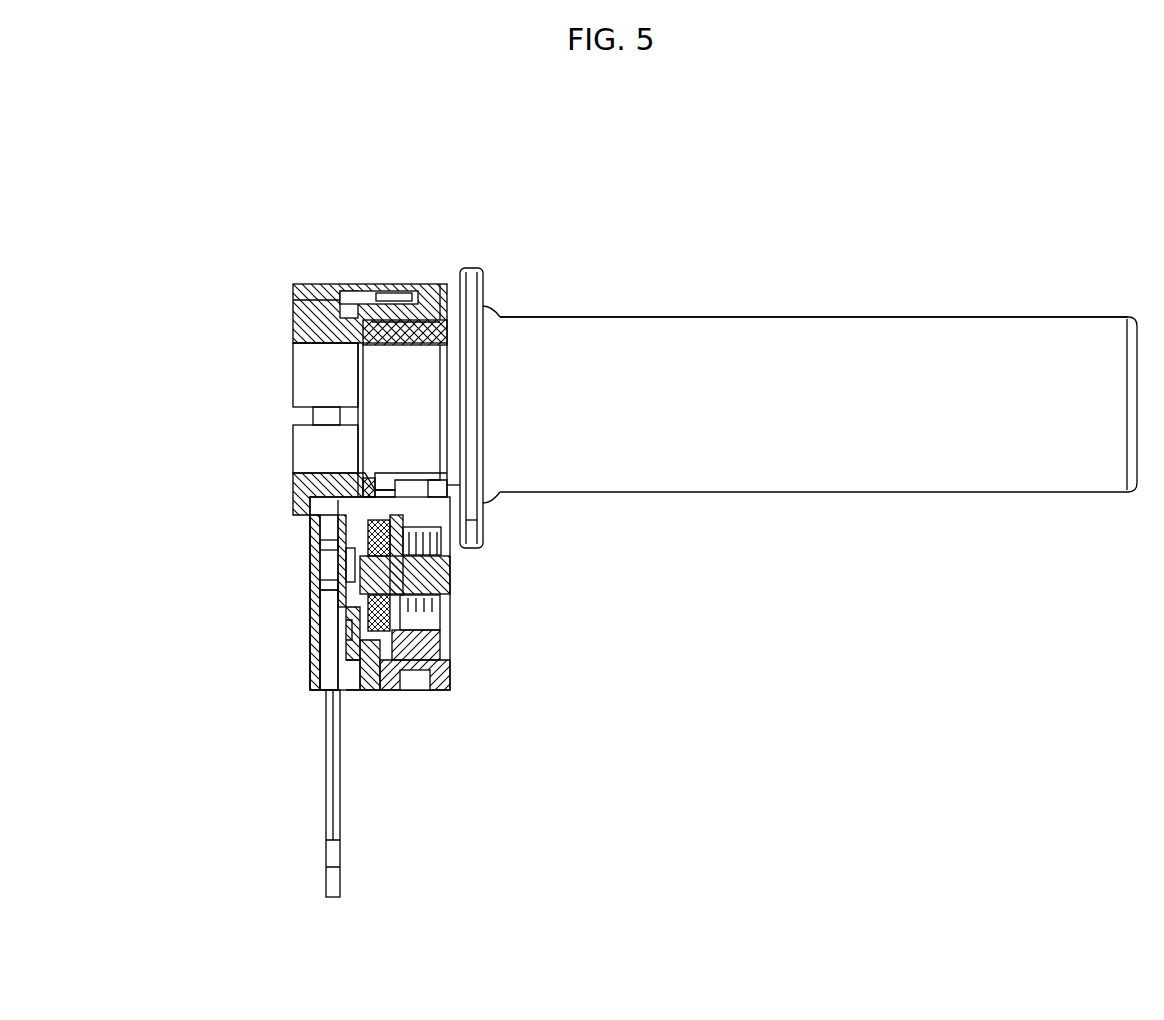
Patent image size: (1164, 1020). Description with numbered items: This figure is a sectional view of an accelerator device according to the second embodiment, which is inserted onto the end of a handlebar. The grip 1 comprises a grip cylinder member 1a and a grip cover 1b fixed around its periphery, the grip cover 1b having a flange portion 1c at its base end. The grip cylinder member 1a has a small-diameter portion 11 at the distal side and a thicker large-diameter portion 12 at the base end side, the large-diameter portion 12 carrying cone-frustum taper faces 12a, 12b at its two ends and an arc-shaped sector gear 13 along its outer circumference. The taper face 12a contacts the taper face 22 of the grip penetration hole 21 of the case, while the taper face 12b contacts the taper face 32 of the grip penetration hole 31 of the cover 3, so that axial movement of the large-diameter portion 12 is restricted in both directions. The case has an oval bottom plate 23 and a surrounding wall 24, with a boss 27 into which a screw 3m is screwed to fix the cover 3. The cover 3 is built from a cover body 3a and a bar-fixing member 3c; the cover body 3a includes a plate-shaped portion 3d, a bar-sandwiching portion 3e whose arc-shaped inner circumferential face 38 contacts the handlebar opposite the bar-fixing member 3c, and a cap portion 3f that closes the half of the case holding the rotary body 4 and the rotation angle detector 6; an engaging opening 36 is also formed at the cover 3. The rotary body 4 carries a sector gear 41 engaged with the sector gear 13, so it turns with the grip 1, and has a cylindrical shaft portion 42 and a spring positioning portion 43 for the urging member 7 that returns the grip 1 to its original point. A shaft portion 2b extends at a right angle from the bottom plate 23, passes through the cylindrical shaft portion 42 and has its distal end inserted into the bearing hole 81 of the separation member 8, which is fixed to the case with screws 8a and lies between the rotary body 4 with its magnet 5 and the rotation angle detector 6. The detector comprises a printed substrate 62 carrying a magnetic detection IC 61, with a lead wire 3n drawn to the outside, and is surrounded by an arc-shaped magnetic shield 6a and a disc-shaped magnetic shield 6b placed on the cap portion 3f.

The grip 1 is at (937, 355).
The grip cylinder member 1a is at (462, 272).
The grip cover 1b is at (770, 356).
The flange portion 1c is at (471, 528).
The shaft portion 2b is at (447, 575).
The cover 3 is at (304, 540).
The cover body 3a is at (296, 478).
The bar-fixing member 3c is at (296, 340).
The plate-shaped portion 3d is at (368, 284).
The bar-sandwiching portion 3e is at (296, 434).
The cap portion 3f is at (312, 528).
The screw 3m is at (300, 297).
The lead wire 3n is at (329, 728).
The rotary body 4 is at (452, 675).
The magnet 5 is at (328, 605).
The rotation angle detector 6 is at (330, 519).
The magnetic shield 6a is at (350, 692).
The magnetic shield 6b is at (314, 542).
The urging member 7 is at (450, 602).
The separation member 8 is at (347, 625).
The screws 8a is at (357, 690).
The small-diameter portion 11 is at (452, 488).
The large-diameter portion 12 is at (418, 340).
The taper face 12a is at (441, 290).
The taper face 12b is at (345, 327).
The sector gear 13 is at (380, 482).
The grip penetration hole 21 is at (446, 470).
The taper face 22 is at (440, 478).
The bottom plate 23 is at (450, 628).
The surrounding wall 24 is at (410, 291).
The boss 27 is at (385, 291).
The grip penetration hole 31 is at (298, 372).
The taper face 32 is at (370, 480).
The engaging opening 36 is at (386, 690).
The inner circumferential face 38 is at (297, 460).
The sector gear 41 is at (390, 480).
The cylindrical shaft portion 42 is at (450, 583).
The spring positioning portion 43 is at (450, 655).
The magnetic detection IC 61 is at (340, 556).
The printed substrate 62 is at (322, 583).
The bearing hole 81 is at (335, 571).